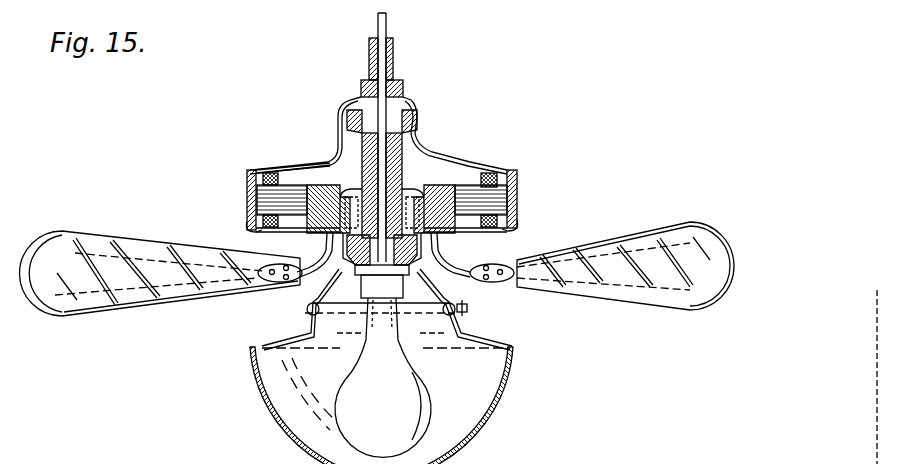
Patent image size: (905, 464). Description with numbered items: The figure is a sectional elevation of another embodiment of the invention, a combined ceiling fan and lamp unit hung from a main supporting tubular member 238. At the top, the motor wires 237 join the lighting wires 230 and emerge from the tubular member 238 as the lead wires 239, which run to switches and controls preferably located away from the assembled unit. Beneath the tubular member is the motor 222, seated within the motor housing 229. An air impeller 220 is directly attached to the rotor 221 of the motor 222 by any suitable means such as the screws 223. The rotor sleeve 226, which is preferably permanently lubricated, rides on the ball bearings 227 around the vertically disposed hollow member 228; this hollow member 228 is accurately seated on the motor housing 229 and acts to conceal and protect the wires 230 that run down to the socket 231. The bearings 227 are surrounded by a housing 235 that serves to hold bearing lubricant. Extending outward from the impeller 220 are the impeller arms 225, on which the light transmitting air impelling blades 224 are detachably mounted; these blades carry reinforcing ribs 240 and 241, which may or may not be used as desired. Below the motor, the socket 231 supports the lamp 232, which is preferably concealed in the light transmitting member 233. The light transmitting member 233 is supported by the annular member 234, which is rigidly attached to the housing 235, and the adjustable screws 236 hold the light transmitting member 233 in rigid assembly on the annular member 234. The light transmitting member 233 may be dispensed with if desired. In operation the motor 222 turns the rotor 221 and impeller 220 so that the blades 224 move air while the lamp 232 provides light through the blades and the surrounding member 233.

The air impeller 220 is at (248, 221).
The rotor 221 is at (248, 195).
The motor 222 is at (248, 183).
The screws 223 is at (515, 215).
The light transmitting air impelling blades 224 is at (57, 318).
The impeller arms 225 is at (318, 243).
The rotor sleeve 226 is at (440, 170).
The ball bearings 227 is at (517, 200).
The hollow member 228 is at (425, 156).
The motor housing 229 is at (415, 140).
The wires 230 is at (385, 109).
The socket 231 is at (463, 311).
The lamp 232 is at (430, 397).
The light transmitting member 233 is at (492, 440).
The annular member 234 is at (445, 282).
The housing 235 is at (518, 178).
The adjustable screws 236 is at (456, 303).
The motor wires 237 is at (340, 117).
The main supporting tubular member 238 is at (367, 68).
The lead wires 239 is at (375, 32).
The reinforcing rib 240 is at (137, 288).
The reinforcing rib 241 is at (163, 261).